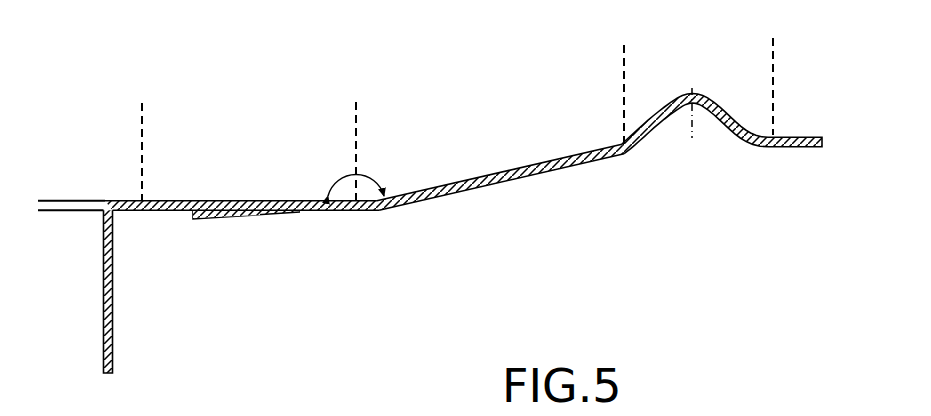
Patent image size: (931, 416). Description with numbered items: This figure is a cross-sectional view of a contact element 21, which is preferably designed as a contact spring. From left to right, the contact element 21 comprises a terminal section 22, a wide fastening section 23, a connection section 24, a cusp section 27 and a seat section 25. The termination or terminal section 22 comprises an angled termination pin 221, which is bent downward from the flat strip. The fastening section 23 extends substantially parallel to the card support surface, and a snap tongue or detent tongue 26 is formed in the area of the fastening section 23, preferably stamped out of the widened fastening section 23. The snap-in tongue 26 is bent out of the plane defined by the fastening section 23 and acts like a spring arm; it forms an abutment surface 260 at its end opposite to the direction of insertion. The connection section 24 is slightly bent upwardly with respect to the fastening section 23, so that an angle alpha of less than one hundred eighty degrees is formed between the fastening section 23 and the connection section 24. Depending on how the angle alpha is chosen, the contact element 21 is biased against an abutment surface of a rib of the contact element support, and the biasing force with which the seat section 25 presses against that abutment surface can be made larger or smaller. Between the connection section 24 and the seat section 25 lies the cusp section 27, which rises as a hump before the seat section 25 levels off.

The contact element 21 is at (435, 201).
The terminal section 22 is at (103, 197).
The angled termination pin 221 is at (116, 346).
The fastening section 23 is at (291, 197).
The connection section 24 is at (507, 166).
The seat section 25 is at (805, 131).
The snap tongue 26 is at (230, 219).
The abutment surface 260 is at (193, 216).
The cusp section 27 is at (673, 96).
The angle alpha is at (378, 183).